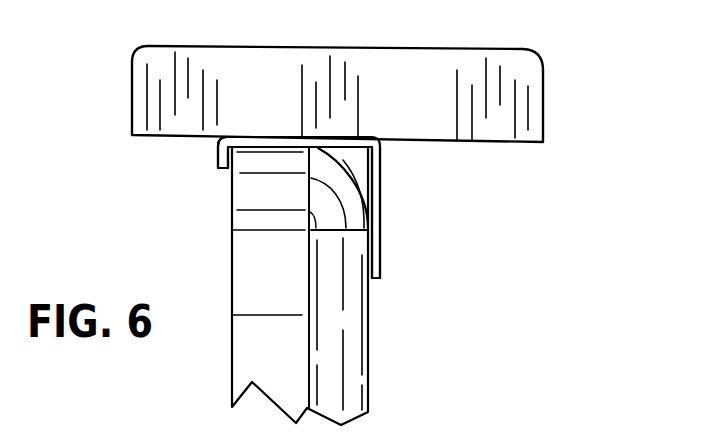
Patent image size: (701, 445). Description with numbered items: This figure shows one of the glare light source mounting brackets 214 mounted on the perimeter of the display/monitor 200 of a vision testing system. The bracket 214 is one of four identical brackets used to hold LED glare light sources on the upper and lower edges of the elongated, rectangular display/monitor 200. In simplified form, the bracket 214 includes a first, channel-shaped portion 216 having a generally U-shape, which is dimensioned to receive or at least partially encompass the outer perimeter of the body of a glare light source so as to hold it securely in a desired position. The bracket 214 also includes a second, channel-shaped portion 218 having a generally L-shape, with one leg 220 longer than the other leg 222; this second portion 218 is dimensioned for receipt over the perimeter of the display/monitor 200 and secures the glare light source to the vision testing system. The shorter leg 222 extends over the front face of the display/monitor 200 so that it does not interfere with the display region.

The display/monitor 200 is at (260, 202).
The bracket 214 is at (540, 98).
The first channel-shaped portion 216 is at (280, 93).
The second channel-shaped portion 218 is at (382, 172).
The leg 220 is at (380, 243).
The shorter leg 222 is at (218, 157).